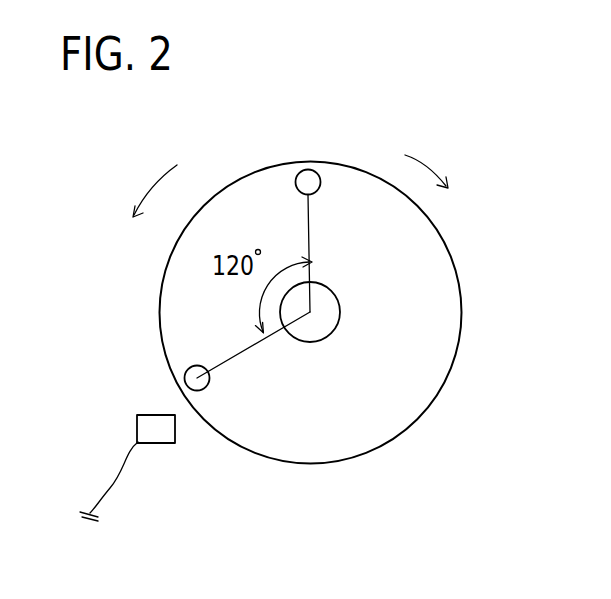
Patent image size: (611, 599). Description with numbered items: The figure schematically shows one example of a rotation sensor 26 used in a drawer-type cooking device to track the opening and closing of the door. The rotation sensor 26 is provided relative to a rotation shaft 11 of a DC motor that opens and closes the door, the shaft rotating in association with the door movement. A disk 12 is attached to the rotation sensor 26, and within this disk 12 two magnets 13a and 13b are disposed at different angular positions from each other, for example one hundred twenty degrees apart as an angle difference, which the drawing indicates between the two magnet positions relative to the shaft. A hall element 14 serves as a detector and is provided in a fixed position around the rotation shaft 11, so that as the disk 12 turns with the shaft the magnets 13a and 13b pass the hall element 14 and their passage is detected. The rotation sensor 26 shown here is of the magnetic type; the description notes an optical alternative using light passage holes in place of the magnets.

The rotation sensor 26 is at (445, 112).
The disk 12 is at (423, 260).
The rotation shaft 11 is at (313, 322).
The magnet 13a is at (307, 175).
The magnet 13b is at (193, 375).
The hall element 14 is at (142, 413).